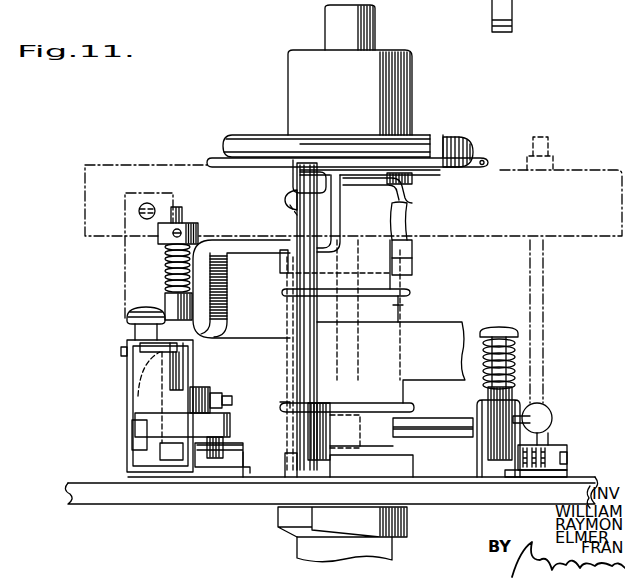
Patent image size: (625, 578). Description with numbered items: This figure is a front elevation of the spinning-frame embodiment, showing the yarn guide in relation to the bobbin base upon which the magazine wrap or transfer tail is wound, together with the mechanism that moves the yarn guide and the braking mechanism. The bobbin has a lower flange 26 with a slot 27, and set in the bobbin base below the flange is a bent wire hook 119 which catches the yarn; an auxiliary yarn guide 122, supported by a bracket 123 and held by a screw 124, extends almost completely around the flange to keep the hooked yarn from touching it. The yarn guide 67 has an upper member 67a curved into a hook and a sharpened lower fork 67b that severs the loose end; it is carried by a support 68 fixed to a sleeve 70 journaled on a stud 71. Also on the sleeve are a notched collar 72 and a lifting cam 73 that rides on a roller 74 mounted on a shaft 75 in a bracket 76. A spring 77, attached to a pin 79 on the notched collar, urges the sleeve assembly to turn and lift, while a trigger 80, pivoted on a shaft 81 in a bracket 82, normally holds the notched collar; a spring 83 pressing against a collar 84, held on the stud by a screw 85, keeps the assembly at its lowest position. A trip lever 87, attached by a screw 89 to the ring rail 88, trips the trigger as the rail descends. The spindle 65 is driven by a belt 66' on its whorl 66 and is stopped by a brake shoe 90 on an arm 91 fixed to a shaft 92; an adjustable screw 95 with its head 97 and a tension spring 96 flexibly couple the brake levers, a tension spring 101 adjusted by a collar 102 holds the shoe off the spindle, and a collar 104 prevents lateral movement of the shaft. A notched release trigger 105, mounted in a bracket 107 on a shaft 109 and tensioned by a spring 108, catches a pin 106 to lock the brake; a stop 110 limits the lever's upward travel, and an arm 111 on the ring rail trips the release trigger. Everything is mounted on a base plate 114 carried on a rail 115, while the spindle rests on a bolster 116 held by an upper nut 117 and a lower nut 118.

The flange 26 is at (252, 147).
The slot 27 is at (440, 147).
The spindle 65 is at (396, 221).
The whorl 66 is at (358, 305).
The belt 66' is at (394, 350).
The yarn guide 67 is at (341, 227).
The upper member 67a is at (363, 172).
The lower fork 67b is at (410, 200).
The support 68 is at (245, 245).
The sleeve 70 is at (165, 297).
The stud 71 is at (183, 212).
The notched collar 72 is at (200, 388).
The lifting cam 73 is at (228, 420).
The roller 74 is at (224, 445).
The shaft 75 is at (243, 448).
The bracket 76 is at (243, 478).
The spring 77 is at (222, 395).
The pin 79 is at (233, 400).
The trigger 80 is at (128, 322).
The shaft 81 is at (121, 350).
The bracket 82 is at (127, 371).
The spring 83 is at (165, 262).
The collar 84 is at (198, 229).
The screw 85 is at (173, 233).
The trip lever 87 is at (126, 250).
The ring rail 88 is at (85, 199).
The screw 89 is at (146, 203).
The brake shoe 90 is at (412, 258).
The arm 91 is at (350, 341).
The shaft 92 is at (422, 418).
The adjustable screw 95 is at (510, 354).
The tension spring 96 is at (515, 343).
The head 97 is at (495, 327).
The tension spring 101 is at (303, 470).
The collar 102 is at (328, 458).
The collar 104 is at (549, 436).
The release trigger 105 is at (545, 405).
The pin 106 is at (552, 416).
The bracket 107 is at (566, 474).
The spring 108 is at (567, 450).
The shaft 109 is at (567, 459).
The stop 110 is at (477, 448).
The arm 111 is at (540, 276).
The base plate 114 is at (127, 472).
The rail 115 is at (75, 483).
The bolster 116 is at (387, 446).
The upper adjusting and retaining nut 117 is at (405, 465).
The lower adjusting and retaining nut 118 is at (407, 520).
The wire hook 119 is at (413, 180).
The auxiliary yarn guide 122 is at (483, 160).
The bracket 123 is at (285, 285).
The screw 124 is at (285, 200).